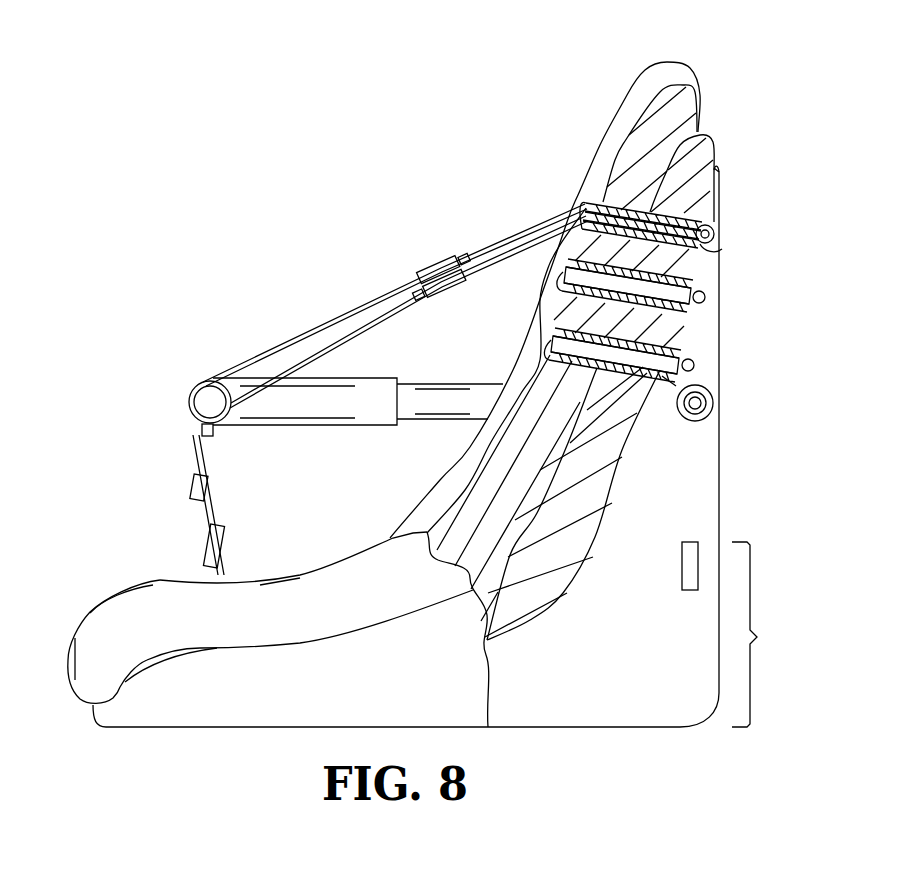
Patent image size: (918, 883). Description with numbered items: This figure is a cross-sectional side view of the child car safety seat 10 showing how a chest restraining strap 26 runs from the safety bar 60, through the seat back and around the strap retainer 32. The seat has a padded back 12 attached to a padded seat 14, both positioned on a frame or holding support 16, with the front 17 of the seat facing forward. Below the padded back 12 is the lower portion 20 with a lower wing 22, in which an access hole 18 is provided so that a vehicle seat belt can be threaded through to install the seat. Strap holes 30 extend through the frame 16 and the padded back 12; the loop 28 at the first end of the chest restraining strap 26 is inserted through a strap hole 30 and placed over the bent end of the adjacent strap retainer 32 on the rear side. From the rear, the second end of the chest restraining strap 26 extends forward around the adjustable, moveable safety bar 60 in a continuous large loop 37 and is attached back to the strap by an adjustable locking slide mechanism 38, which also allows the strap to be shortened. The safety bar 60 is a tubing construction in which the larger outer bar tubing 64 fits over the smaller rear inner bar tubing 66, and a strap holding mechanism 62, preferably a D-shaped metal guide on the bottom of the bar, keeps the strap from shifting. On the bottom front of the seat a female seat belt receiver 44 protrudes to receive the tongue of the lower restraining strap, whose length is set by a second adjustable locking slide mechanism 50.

The child car safety seat 10 is at (543, 131).
The padded back 12 is at (552, 292).
The padded seat 14 is at (292, 570).
The frame or holding support 16 is at (693, 335).
The front 17 is at (53, 659).
The access hole 18 is at (690, 581).
The lower portion 20 is at (763, 634).
The lower wing 22 is at (710, 712).
The chest restraining strap 26 is at (352, 335).
The loop 28 is at (723, 250).
The strap hole 30 is at (669, 388).
The strap retainer 32 is at (718, 228).
The continuous large loop 37 is at (317, 348).
The adjustable locking slide mechanism 38 is at (438, 268).
The female seat belt receiver 44 is at (205, 553).
The adjustable locking slide mechanism 50 is at (190, 487).
The safety bar 60 is at (381, 430).
The strap holding mechanism 62 is at (210, 440).
The outer bar tubing 64 is at (190, 406).
The rear inner bar tubing 66 is at (713, 423).